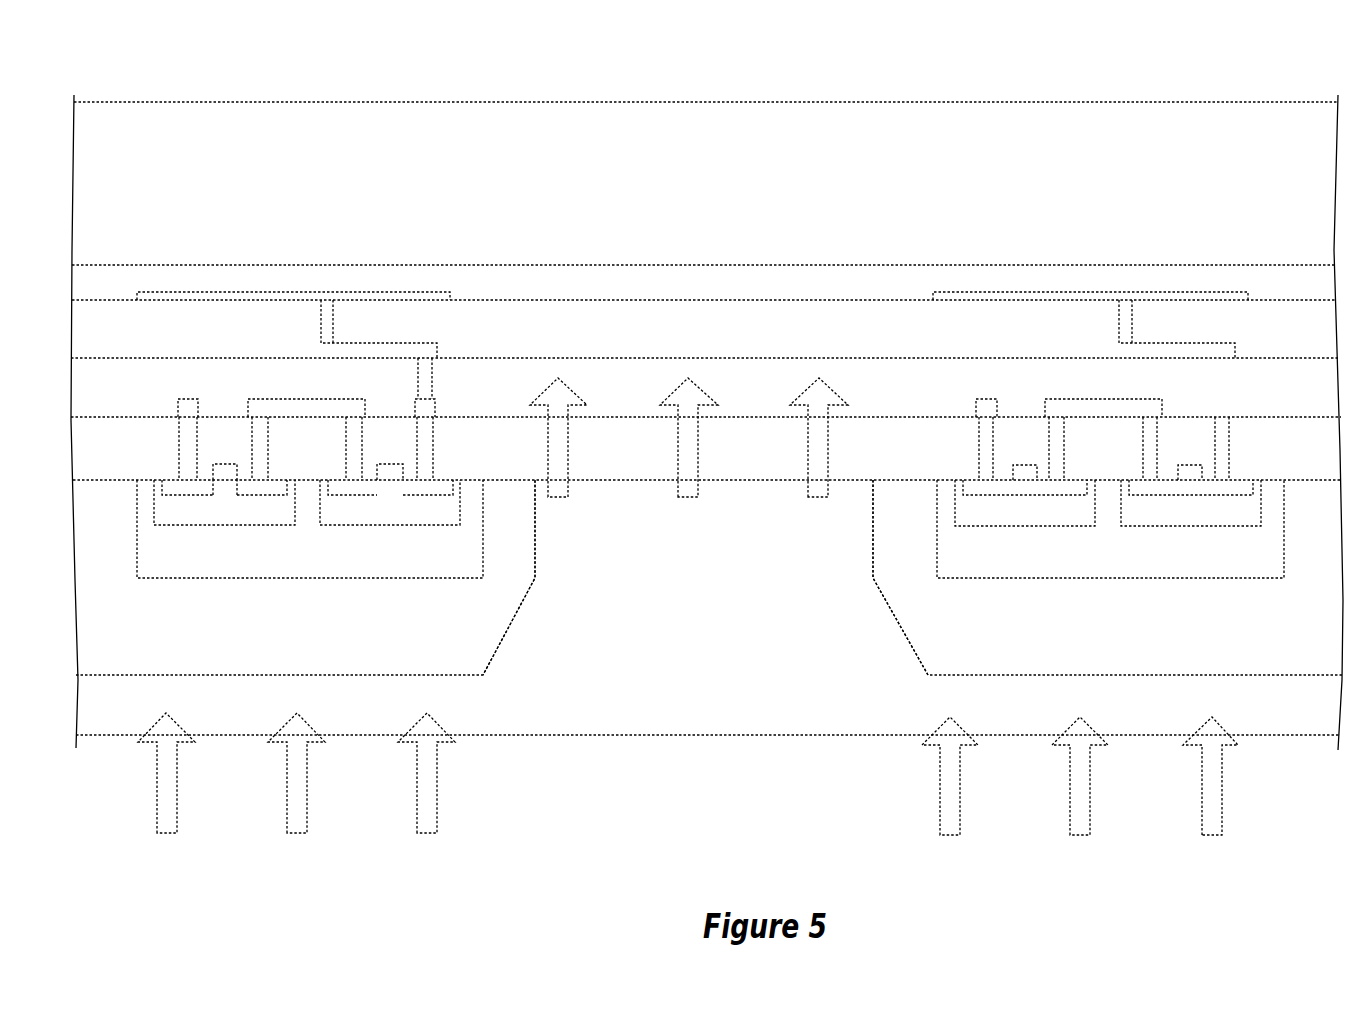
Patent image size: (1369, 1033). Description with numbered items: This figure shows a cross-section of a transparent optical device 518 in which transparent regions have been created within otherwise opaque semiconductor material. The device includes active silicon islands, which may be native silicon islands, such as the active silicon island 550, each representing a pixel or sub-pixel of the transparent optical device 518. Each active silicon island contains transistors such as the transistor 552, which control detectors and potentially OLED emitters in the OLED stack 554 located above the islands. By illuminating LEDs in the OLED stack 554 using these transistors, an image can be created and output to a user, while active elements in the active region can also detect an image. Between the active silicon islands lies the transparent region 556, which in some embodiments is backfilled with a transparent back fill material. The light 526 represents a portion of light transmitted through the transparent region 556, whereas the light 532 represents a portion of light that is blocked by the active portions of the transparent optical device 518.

The transparent optical device 518 is at (1298, 72).
The OLED stack 554 is at (704, 294).
The transistor 552 is at (237, 518).
The active silicon island 550 is at (285, 622).
The transparent region 556 is at (720, 590).
The light 526 is at (832, 399).
The light 532 is at (425, 788).